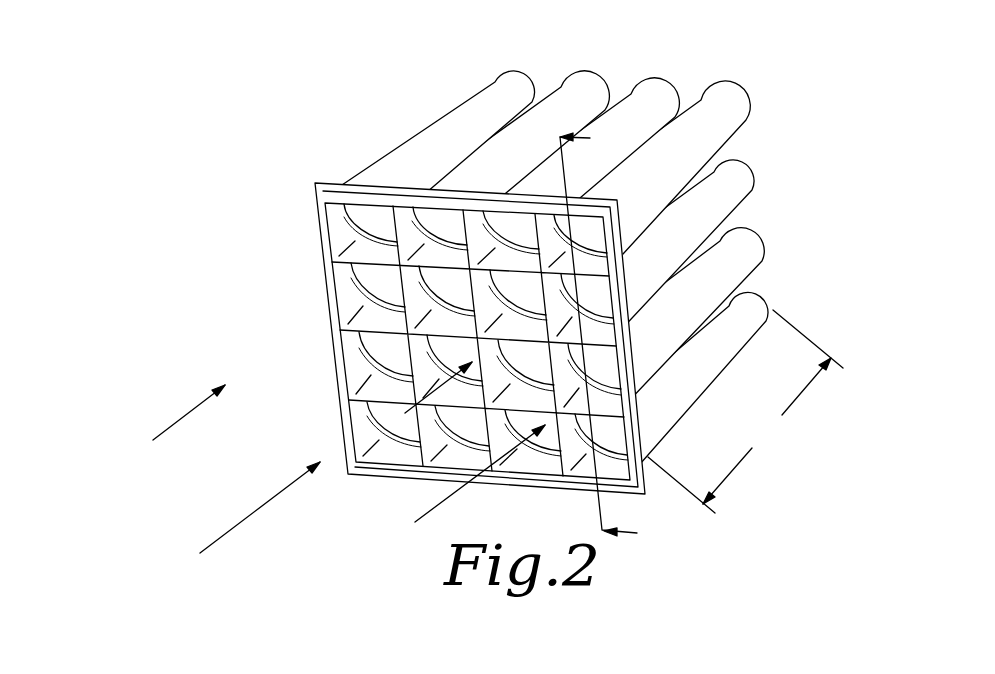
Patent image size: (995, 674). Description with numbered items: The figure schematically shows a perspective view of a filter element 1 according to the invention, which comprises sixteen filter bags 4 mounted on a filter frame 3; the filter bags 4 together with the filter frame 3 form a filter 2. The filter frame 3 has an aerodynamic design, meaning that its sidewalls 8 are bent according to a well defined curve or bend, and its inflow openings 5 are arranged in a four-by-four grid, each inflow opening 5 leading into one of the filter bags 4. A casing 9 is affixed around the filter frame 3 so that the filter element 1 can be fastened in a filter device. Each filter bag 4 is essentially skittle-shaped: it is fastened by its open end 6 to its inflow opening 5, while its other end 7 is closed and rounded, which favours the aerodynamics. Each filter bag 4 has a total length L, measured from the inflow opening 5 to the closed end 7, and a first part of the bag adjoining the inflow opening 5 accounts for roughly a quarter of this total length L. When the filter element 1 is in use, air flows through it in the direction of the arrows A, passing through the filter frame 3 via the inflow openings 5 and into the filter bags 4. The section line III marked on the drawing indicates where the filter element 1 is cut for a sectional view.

The filter element 1 is at (202, 58).
The filter 2 is at (513, 255).
The filter frame 3 is at (432, 337).
The filter bag 4 is at (493, 160).
The inflow opening 5 is at (317, 205).
The open end 6 is at (350, 175).
The end 7 is at (582, 245).
The sidewall 8 is at (362, 249).
The casing 9 is at (527, 285).
The arrows A is at (233, 469).
The section line III is at (611, 342).
The total length L is at (745, 411).